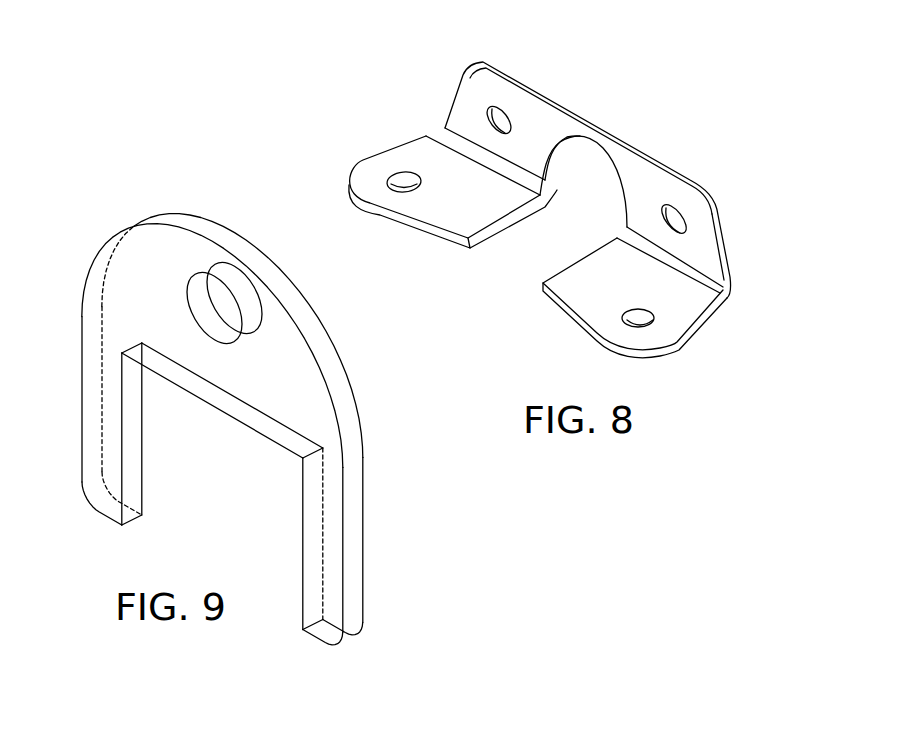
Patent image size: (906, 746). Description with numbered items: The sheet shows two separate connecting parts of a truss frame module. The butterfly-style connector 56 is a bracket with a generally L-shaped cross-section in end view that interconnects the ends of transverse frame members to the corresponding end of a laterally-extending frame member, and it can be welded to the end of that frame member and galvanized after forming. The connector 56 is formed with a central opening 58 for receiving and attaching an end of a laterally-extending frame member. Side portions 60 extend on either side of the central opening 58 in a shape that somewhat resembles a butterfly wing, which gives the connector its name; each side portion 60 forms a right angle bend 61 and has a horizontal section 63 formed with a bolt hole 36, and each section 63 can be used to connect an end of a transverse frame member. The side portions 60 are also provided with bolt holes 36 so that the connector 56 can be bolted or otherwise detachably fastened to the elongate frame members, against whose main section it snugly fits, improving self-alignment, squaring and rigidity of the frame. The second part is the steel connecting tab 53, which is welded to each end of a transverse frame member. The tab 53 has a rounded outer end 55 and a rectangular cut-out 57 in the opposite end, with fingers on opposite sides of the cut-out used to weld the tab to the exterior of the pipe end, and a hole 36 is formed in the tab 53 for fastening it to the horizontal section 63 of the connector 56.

In FIG. 9, the connecting tab 53 is at (135, 193).
In FIG. 9, the rounded outer end 55 is at (203, 229).
In FIG. 9, the hole 36 is at (223, 302).
In FIG. 8, the hole 36 is at (683, 218).
In FIG. 9, the rectangular cut-out 57 is at (241, 509).
In FIG. 8, the butterfly-style connector 56 is at (423, 103).
In FIG. 8, the central opening 58 is at (588, 180).
In FIG. 8, the side portion 60 is at (703, 239).
In FIG. 8, the right angle bend 61 is at (728, 297).
In FIG. 8, the horizontal section 63 is at (375, 170).